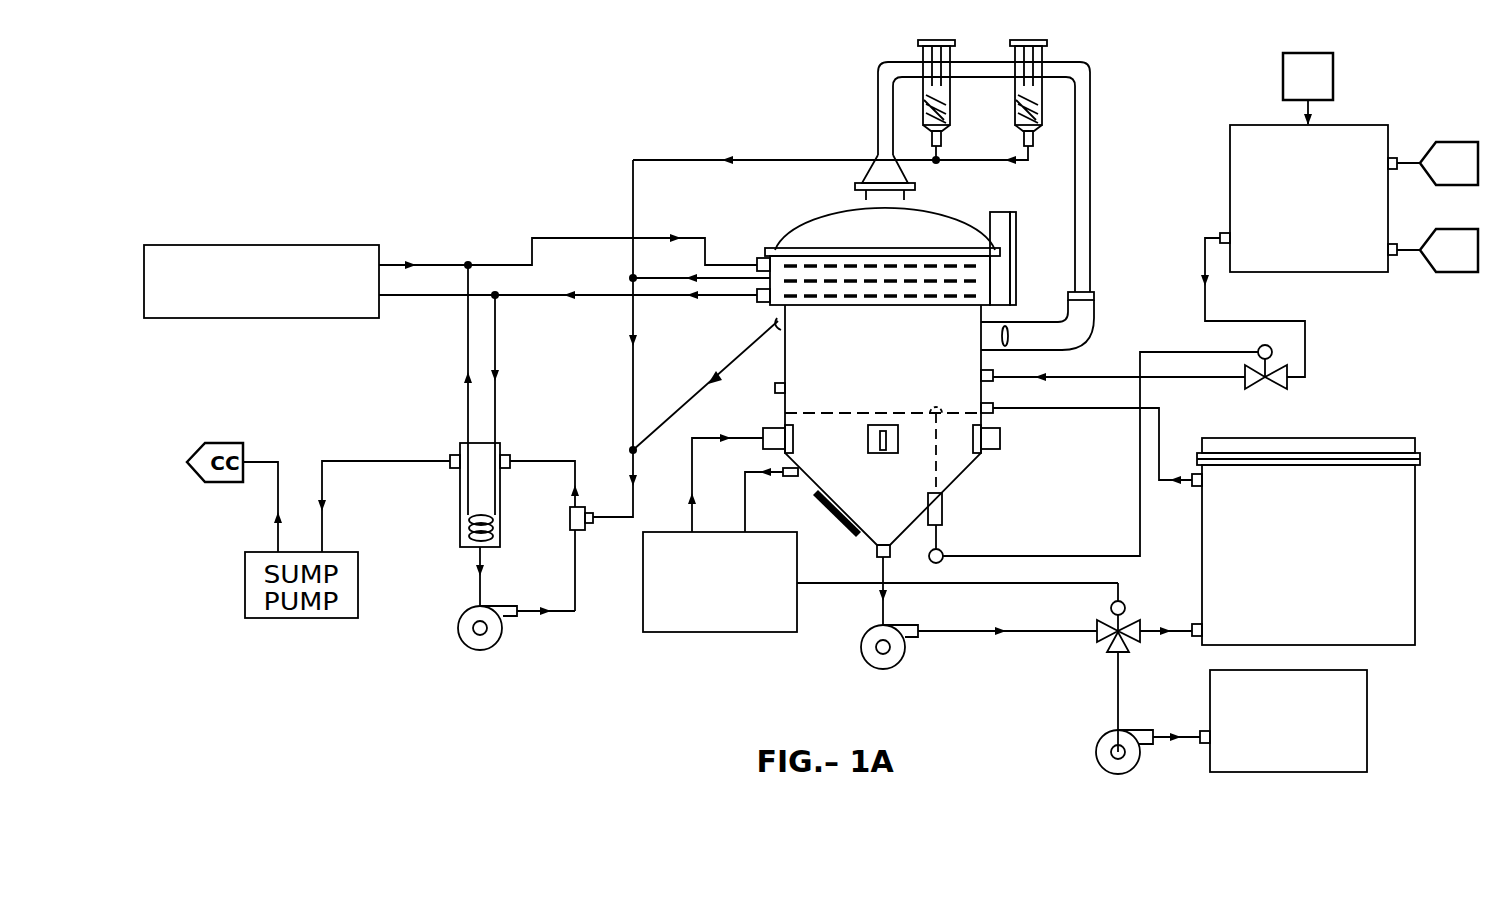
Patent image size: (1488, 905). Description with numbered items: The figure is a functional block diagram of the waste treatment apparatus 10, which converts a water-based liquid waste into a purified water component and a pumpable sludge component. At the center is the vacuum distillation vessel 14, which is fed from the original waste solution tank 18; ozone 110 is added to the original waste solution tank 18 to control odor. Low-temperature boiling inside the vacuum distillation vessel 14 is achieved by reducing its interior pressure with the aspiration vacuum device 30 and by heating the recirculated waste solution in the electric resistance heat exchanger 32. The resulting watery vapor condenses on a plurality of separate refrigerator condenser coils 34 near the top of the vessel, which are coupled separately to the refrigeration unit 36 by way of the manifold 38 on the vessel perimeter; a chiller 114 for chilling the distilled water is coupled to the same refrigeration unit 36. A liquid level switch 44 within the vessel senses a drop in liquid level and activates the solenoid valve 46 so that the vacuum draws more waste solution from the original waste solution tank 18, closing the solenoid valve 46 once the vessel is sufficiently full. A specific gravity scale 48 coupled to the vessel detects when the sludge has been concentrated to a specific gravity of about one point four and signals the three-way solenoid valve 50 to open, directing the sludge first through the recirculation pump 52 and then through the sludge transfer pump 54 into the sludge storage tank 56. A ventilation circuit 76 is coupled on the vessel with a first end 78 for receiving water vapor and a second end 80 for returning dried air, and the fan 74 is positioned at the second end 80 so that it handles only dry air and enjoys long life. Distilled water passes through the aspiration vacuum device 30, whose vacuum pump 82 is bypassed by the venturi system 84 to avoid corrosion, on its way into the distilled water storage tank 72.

The waste treatment apparatus 10 is at (502, 116).
The vacuum distillation vessel 14 is at (806, 350).
The original waste solution tank 18 is at (1230, 150).
The aspiration vacuum device 30 is at (519, 644).
The electric resistance heat exchanger 32 is at (1202, 572).
The refrigerator condenser coils 34 is at (852, 265).
The refrigeration unit 36 is at (270, 245).
The manifold 38 is at (753, 248).
The liquid level switch 44 is at (946, 512).
The solenoid valve 46 is at (1275, 388).
The specific gravity scale 48 is at (757, 632).
The three-way solenoid valve 50 is at (1108, 642).
The recirculation pump 52 is at (882, 672).
The sludge transfer pump 54 is at (1099, 765).
The sludge storage tank 56 is at (1258, 772).
The distilled water storage tank 72 is at (460, 490).
The fan 74 is at (1012, 336).
The ventilation circuit 76 is at (1083, 213).
The first end 78 is at (880, 168).
The second end 80 is at (992, 338).
The vacuum pump 82 is at (480, 653).
The venturi system 84 is at (575, 532).
The ozone 110 is at (1315, 53).
The chiller 114 is at (468, 530).